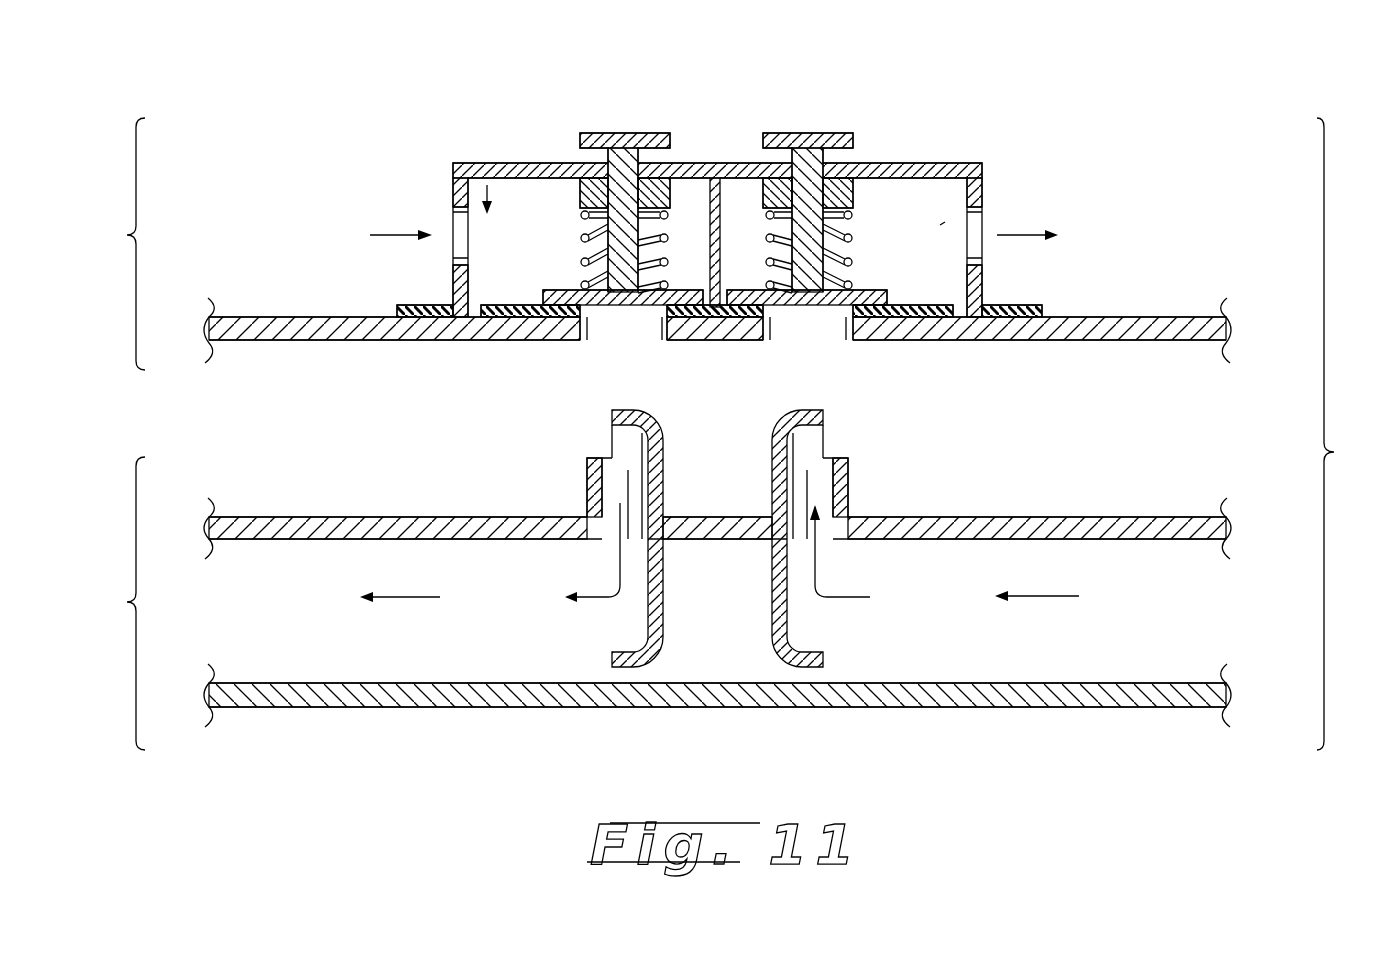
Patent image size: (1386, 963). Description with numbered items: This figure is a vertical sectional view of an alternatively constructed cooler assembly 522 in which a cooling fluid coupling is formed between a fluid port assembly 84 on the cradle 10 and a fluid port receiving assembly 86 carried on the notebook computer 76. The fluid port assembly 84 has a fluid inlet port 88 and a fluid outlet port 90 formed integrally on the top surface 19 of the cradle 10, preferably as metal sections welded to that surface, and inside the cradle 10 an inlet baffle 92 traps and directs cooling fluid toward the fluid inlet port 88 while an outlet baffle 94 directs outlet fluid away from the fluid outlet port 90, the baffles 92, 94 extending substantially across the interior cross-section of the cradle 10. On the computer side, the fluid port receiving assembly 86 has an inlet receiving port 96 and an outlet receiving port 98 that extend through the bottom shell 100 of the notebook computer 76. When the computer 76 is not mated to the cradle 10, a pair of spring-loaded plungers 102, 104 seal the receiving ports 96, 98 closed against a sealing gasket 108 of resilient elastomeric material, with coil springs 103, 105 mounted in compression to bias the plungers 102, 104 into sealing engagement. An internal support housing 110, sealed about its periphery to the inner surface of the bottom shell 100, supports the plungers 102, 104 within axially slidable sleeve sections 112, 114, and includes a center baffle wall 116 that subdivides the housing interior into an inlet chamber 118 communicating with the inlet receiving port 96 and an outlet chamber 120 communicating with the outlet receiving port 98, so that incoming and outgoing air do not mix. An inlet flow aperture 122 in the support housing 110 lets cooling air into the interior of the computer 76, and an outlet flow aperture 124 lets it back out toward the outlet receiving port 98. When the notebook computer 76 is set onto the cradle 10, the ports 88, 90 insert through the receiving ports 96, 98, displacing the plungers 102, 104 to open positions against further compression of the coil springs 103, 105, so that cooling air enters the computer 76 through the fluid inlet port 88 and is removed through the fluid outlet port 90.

The cradle 10 is at (657, 567).
The top surface 19 is at (415, 517).
The notebook computer 76 is at (658, 210).
The fluid port assembly 84 is at (955, 418).
The fluid port receiving assembly 86 is at (1000, 80).
The fluid inlet port 88 is at (763, 527).
The fluid outlet port 90 is at (666, 538).
The inlet baffle 92 is at (770, 648).
The outlet baffle 94 is at (663, 607).
The inlet receiving port 96 is at (848, 323).
The outlet receiving port 98 is at (582, 323).
The bottom shell 100 is at (258, 318).
The spring-loaded plunger 102 is at (805, 133).
The coil spring 103 is at (855, 232).
The spring-loaded plunger 104 is at (622, 133).
The coil spring 105 is at (585, 240).
The sealing gasket 108 is at (522, 305).
The internal support housing 110 is at (960, 163).
The sleeve section 112 is at (866, 165).
The sleeve section 114 is at (583, 195).
The center baffle wall 116 is at (709, 176).
The inlet chamber 118 is at (940, 225).
The outlet chamber 120 is at (485, 185).
The inlet flow aperture 122 is at (980, 257).
The outlet flow aperture 124 is at (452, 252).
The cooler assembly 522 is at (1351, 434).